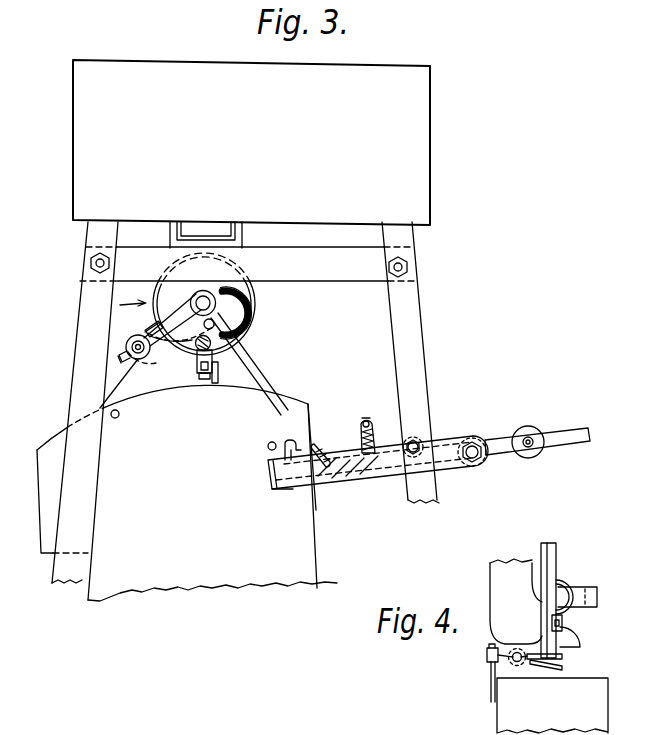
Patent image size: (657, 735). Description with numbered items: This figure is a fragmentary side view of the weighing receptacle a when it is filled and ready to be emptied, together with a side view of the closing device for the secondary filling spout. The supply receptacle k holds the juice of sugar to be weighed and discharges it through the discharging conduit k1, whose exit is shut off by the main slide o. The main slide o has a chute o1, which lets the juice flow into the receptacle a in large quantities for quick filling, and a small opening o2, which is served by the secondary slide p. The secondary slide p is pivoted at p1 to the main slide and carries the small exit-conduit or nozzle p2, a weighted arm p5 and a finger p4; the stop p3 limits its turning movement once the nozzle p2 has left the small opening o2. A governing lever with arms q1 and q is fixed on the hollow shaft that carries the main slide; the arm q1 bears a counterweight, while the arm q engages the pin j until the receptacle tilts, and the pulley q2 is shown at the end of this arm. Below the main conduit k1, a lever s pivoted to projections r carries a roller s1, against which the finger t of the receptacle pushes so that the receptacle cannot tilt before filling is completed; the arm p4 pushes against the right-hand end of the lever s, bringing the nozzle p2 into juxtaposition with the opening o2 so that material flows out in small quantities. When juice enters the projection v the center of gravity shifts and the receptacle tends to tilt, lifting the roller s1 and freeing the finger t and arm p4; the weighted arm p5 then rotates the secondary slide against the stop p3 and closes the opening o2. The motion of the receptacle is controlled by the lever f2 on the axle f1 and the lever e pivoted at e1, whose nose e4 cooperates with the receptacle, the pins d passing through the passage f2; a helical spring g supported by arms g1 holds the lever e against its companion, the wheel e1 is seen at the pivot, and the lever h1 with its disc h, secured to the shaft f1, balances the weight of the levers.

In FIG. 3, the supply receptacle k is at (251, 142).
In FIG. 3, the receptacle a is at (187, 493).
In FIG. 3, the projection v is at (45, 497).
In FIG. 3, the pin j is at (116, 427).
In FIG. 3, the main slide o is at (204, 304).
In FIG. 4, the main slide o is at (553, 572).
In FIG. 3, the chute o1 is at (245, 302).
In FIG. 4, the chute o1 is at (585, 613).
In FIG. 3, the small opening o2 is at (144, 371).
In FIG. 3, the secondary slide p is at (157, 318).
In FIG. 3, the pivot of the secondary slide p1 is at (216, 292).
In FIG. 3, the exit-conduit or nozzle p2 is at (222, 355).
In FIG. 4, the exit-conduit or nozzle p2 is at (578, 643).
In FIG. 3, the stop p3 is at (232, 337).
In FIG. 3, the finger p4 is at (200, 365).
In FIG. 4, the finger p4 is at (570, 684).
In FIG. 3, the weighted arm p5 is at (145, 332).
In FIG. 4, the weighted arm p5 is at (557, 616).
In FIG. 3, the arm of the governing lever q is at (278, 388).
In FIG. 3, the arm of the governing lever q1 is at (118, 358).
In FIG. 3, the pulley q2 is at (125, 371).
In FIG. 3, the lever s is at (200, 351).
In FIG. 4, the lever s is at (544, 660).
In FIG. 3, the finger t is at (211, 373).
In FIG. 4, the finger t is at (490, 680).
In FIG. 3, the pin d is at (268, 447).
In FIG. 3, the lever e is at (326, 457).
In FIG. 3, the pivot of lever e e1 is at (432, 429).
In FIG. 3, the nose e4 is at (283, 460).
In FIG. 3, the axle f1 is at (480, 438).
In FIG. 3, the passage f2 is at (370, 473).
In FIG. 3, the helical spring g is at (377, 436).
In FIG. 3, the arms g1 is at (367, 418).
In FIG. 3, the disc h is at (529, 459).
In FIG. 3, the lever h1 is at (586, 428).
In FIG. 4, the discharging conduit k1 is at (516, 601).
In FIG. 4, the projections r is at (517, 665).
In FIG. 4, the roller s1 is at (487, 655).